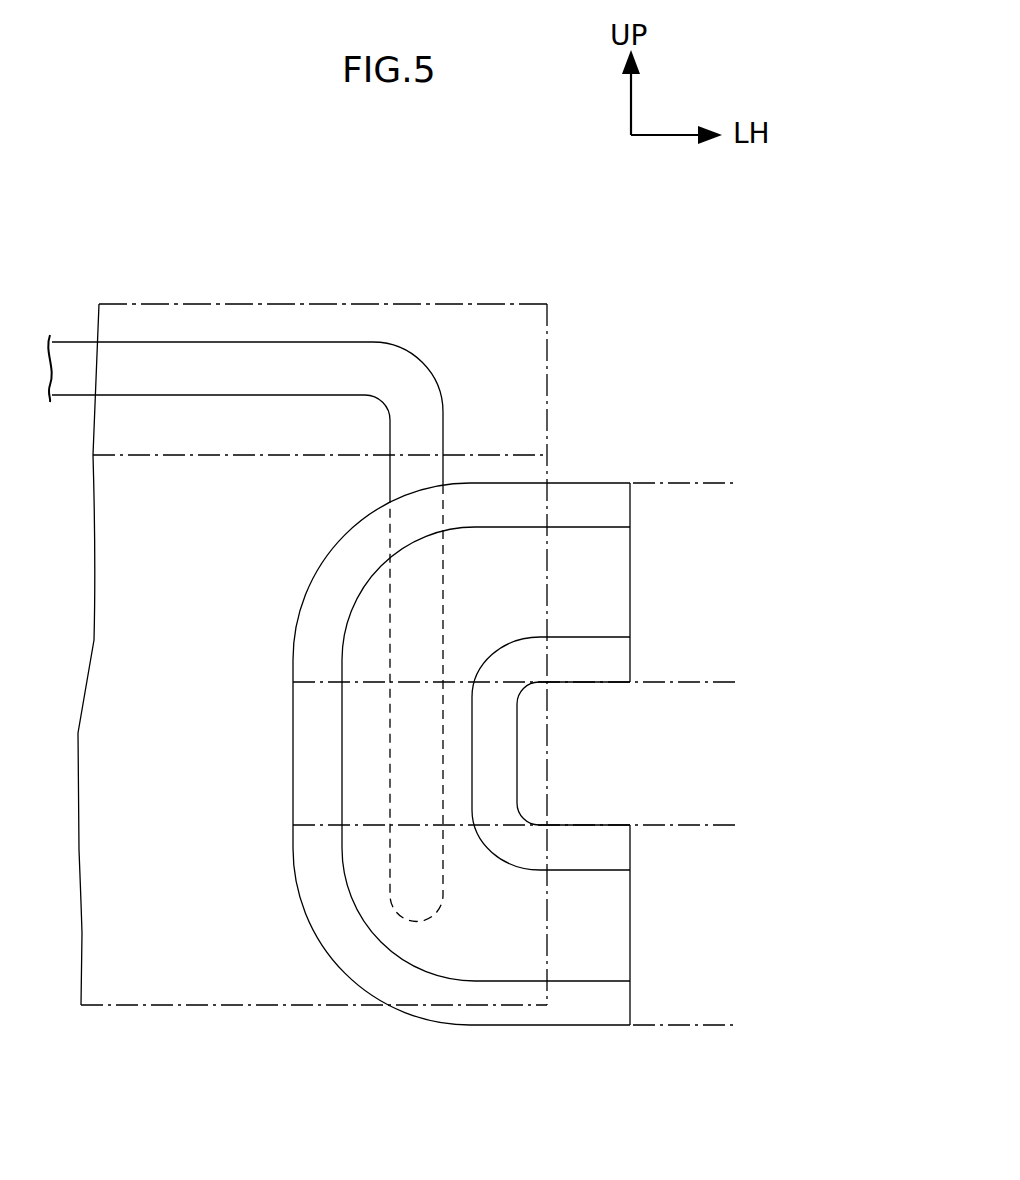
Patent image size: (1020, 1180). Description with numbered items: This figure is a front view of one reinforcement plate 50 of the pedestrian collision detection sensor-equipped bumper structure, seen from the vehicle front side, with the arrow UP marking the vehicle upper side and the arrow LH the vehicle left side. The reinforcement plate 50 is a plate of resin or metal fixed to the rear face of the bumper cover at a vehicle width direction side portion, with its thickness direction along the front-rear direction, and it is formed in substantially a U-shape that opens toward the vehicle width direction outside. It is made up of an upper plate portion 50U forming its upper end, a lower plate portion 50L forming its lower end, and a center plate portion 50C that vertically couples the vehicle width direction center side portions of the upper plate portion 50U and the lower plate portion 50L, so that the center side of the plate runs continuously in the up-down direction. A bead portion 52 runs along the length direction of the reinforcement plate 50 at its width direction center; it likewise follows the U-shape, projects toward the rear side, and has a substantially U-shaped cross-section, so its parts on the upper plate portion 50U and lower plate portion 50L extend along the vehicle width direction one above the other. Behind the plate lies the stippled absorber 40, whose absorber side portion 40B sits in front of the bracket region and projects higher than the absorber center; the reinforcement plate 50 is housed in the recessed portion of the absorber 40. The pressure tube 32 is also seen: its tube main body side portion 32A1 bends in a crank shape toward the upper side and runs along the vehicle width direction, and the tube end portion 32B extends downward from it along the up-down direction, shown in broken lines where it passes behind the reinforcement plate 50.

The pressure tube 32 is at (377, 558).
The tube main body side portion 32A1 is at (176, 342).
The tube end portion 32B is at (447, 468).
The absorber 40 is at (535, 328).
The absorber side portion 40B is at (532, 395).
The reinforcement plate 50 is at (558, 812).
The upper plate portion 50U is at (745, 483).
The center plate portion 50C is at (745, 682).
The lower plate portion 50L is at (745, 825).
The bead portion 52 is at (612, 586).